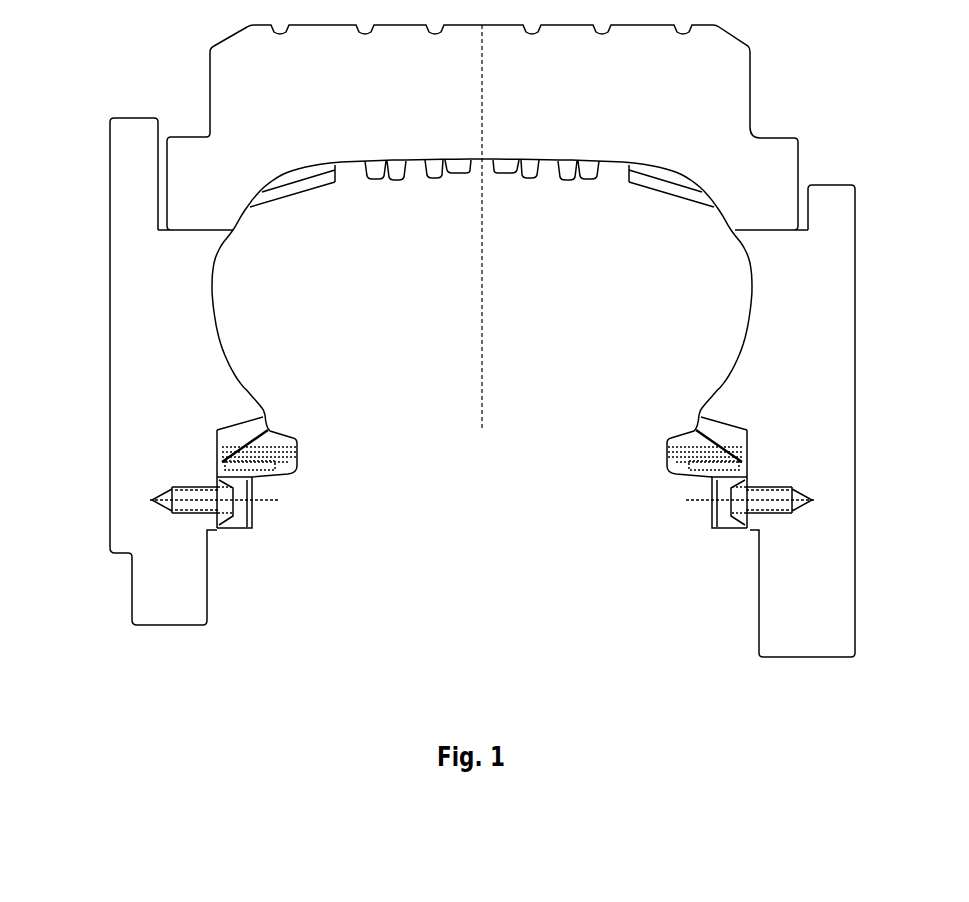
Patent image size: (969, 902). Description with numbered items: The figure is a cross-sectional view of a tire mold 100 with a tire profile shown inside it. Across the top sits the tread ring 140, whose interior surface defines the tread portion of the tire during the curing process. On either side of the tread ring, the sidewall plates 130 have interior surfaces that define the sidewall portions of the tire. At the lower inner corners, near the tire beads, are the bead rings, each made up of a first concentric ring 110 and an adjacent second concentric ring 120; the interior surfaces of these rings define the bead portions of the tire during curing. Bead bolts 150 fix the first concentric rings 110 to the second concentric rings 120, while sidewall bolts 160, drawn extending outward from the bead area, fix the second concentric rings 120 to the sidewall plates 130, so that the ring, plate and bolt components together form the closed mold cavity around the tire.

The tire mold 100 is at (117, 90).
The first concentric ring 110 is at (673, 473).
The second concentric ring 120 is at (727, 535).
The sidewall plate 130 is at (185, 383).
The tread ring 140 is at (650, 86).
The bead bolt 150 is at (742, 462).
The sidewall bolt 160 is at (785, 490).